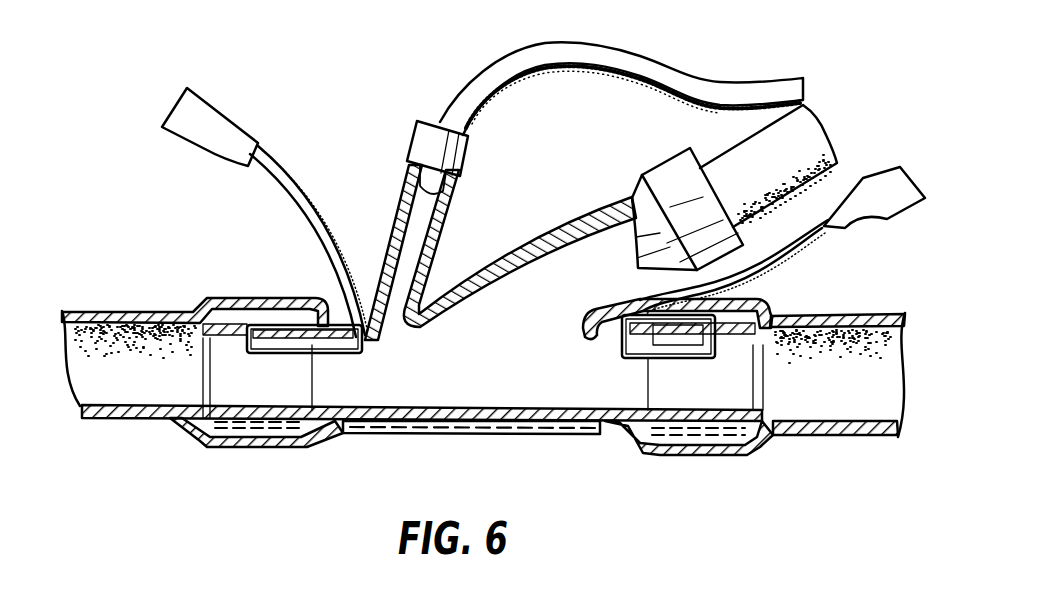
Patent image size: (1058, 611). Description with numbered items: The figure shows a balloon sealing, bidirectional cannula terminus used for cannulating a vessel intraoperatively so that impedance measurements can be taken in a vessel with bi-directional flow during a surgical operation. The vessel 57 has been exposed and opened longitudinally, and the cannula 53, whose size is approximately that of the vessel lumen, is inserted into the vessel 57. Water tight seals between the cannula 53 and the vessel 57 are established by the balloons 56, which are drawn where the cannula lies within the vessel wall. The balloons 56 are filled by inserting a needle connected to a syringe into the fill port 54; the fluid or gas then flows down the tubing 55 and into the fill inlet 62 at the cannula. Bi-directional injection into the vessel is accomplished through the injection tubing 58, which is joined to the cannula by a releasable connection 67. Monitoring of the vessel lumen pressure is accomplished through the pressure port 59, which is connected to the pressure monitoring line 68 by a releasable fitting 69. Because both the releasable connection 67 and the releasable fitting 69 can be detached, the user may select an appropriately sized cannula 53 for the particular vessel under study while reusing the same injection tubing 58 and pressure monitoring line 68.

The cannula 53 is at (389, 126).
The fill port 54 is at (220, 117).
The tubing 55 is at (307, 217).
The balloons 56 is at (313, 410).
The vessel 57 is at (143, 420).
The injection tubing 58 is at (817, 117).
The pressure port 59 is at (447, 207).
The fill inlet 62 is at (245, 315).
The releasable connection 67 is at (680, 172).
The pressure monitoring line 68 is at (634, 57).
The releasable fitting 69 is at (418, 118).